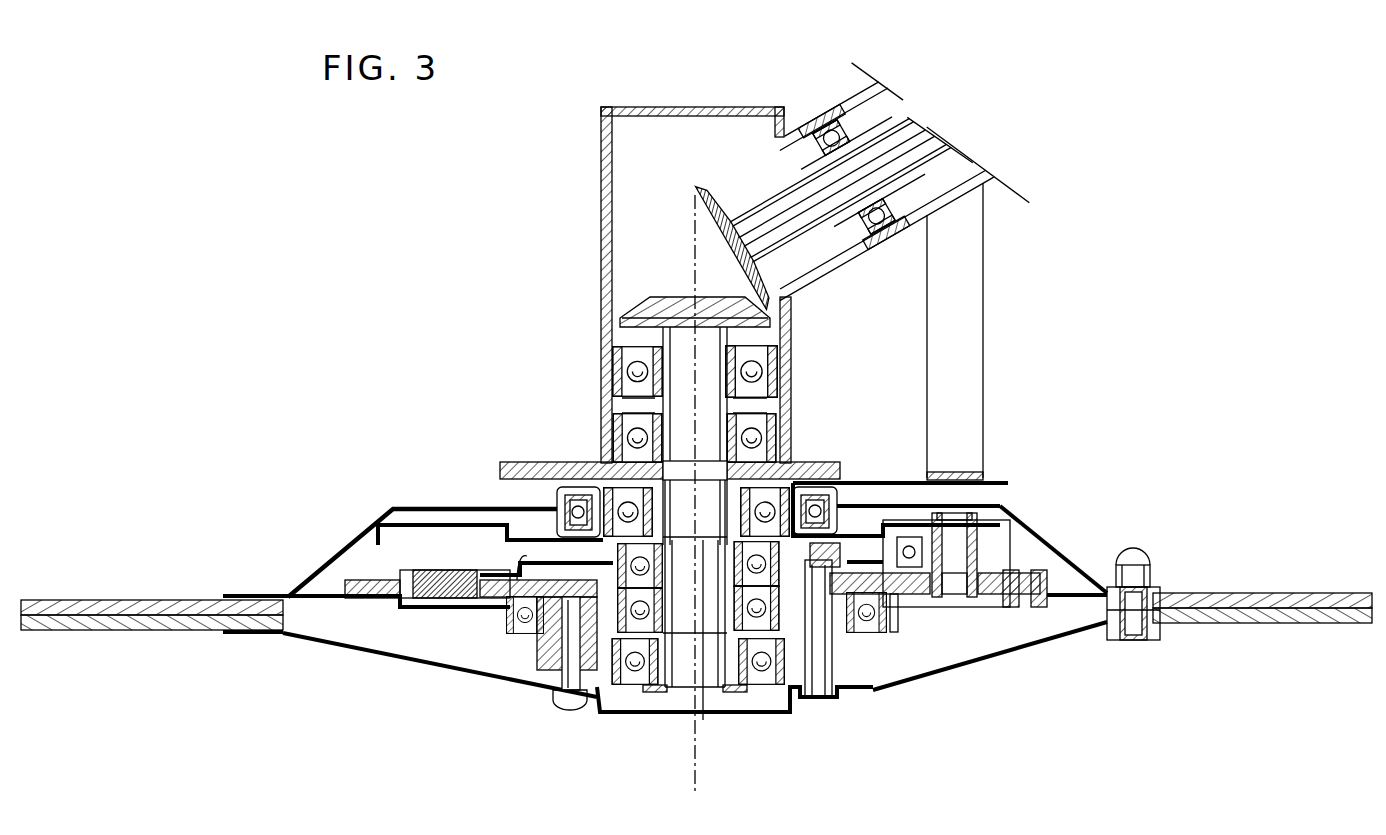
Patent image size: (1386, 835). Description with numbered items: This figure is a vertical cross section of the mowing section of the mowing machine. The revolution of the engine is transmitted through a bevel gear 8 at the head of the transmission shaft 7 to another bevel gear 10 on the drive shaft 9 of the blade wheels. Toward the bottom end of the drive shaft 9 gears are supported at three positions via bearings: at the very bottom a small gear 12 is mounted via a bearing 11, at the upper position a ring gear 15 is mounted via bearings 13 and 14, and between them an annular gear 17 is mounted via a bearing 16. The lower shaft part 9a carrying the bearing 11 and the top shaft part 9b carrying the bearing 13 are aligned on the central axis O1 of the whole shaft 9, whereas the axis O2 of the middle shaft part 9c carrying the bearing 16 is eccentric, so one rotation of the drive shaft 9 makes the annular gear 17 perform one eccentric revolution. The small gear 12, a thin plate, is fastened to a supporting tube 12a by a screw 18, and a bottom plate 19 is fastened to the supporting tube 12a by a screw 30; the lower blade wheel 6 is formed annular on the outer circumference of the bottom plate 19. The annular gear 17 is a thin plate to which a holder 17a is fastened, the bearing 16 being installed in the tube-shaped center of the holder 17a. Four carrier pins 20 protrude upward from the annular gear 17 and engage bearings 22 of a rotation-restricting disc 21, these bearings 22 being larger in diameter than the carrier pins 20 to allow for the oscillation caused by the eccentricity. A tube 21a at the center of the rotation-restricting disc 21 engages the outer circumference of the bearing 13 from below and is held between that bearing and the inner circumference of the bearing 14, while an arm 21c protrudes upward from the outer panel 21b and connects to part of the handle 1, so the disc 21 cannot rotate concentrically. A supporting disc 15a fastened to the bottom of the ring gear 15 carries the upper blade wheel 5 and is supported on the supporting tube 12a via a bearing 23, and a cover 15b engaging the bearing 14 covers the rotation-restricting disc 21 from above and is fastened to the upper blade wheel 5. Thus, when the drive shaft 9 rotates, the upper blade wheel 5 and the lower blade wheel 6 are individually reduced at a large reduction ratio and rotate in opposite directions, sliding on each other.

The handle 1 is at (850, 97).
The upper blade wheel 5 is at (88, 600).
The lower blade wheel 6 is at (72, 632).
The transmission shaft 7 is at (915, 115).
The bevel gear 8 is at (690, 212).
The drive shaft 9 is at (677, 377).
The lower shaft part 9a is at (678, 670).
The top shaft part 9b is at (787, 437).
The middle shaft part 9c is at (757, 650).
The bevel gear 10 is at (630, 305).
The bearing 11 is at (630, 685).
The small gear 12 is at (525, 633).
The supporting tube 12a is at (868, 627).
The bearing 13 is at (615, 462).
The bearing 14 is at (560, 495).
The ring gear 15 is at (373, 580).
The supporting disc 15a is at (332, 598).
The cover 15b is at (318, 570).
The bearing 16 is at (805, 660).
The annular gear 17 is at (403, 600).
The holder 17a is at (520, 595).
The screw 18 is at (890, 617).
The bottom plate 19 is at (1078, 637).
The carrier pins 20 is at (950, 563).
The rotation-restricting disc 21 is at (380, 523).
The tube 21a is at (840, 470).
The outer panel 21b is at (1000, 478).
The arm 21c is at (977, 298).
The bearings 22 is at (1007, 560).
The bearing 23 is at (905, 598).
The screw 30 is at (568, 707).
The central axis O1 is at (715, 508).
The eccentric axis O2 is at (703, 718).